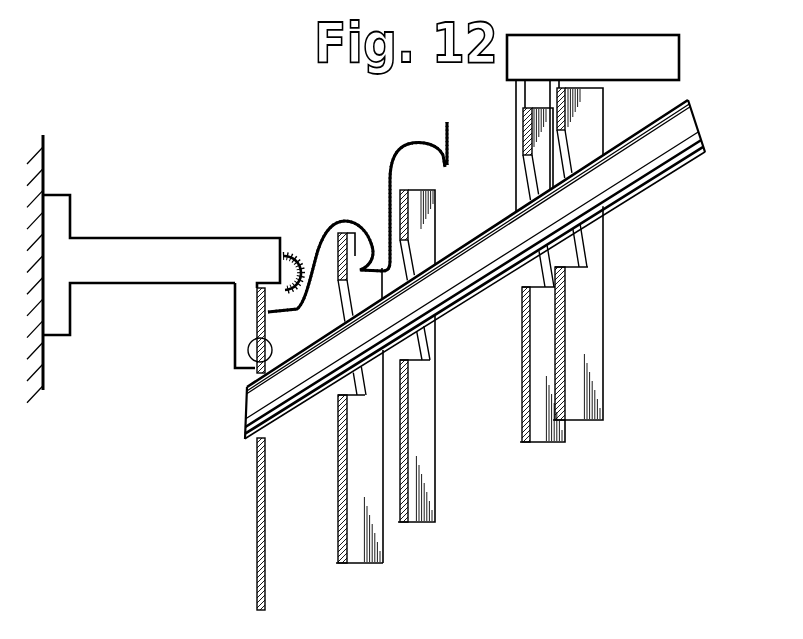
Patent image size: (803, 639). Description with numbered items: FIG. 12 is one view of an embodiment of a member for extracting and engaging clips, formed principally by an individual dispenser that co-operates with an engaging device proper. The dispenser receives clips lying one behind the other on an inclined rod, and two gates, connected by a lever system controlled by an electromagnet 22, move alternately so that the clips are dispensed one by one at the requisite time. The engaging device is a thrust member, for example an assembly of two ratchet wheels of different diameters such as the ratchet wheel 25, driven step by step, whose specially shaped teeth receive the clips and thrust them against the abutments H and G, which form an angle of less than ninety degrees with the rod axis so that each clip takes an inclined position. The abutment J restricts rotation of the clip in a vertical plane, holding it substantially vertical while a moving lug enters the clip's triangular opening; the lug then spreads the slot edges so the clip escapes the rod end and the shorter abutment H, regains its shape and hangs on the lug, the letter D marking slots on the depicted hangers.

The electromagnet 22 is at (612, 80).
The ratchet wheel 25 is at (300, 258).
The abutment J is at (270, 278).
The abutment H is at (247, 320).
The abutment G is at (245, 335).
The slat hanger slot D is at (353, 281).